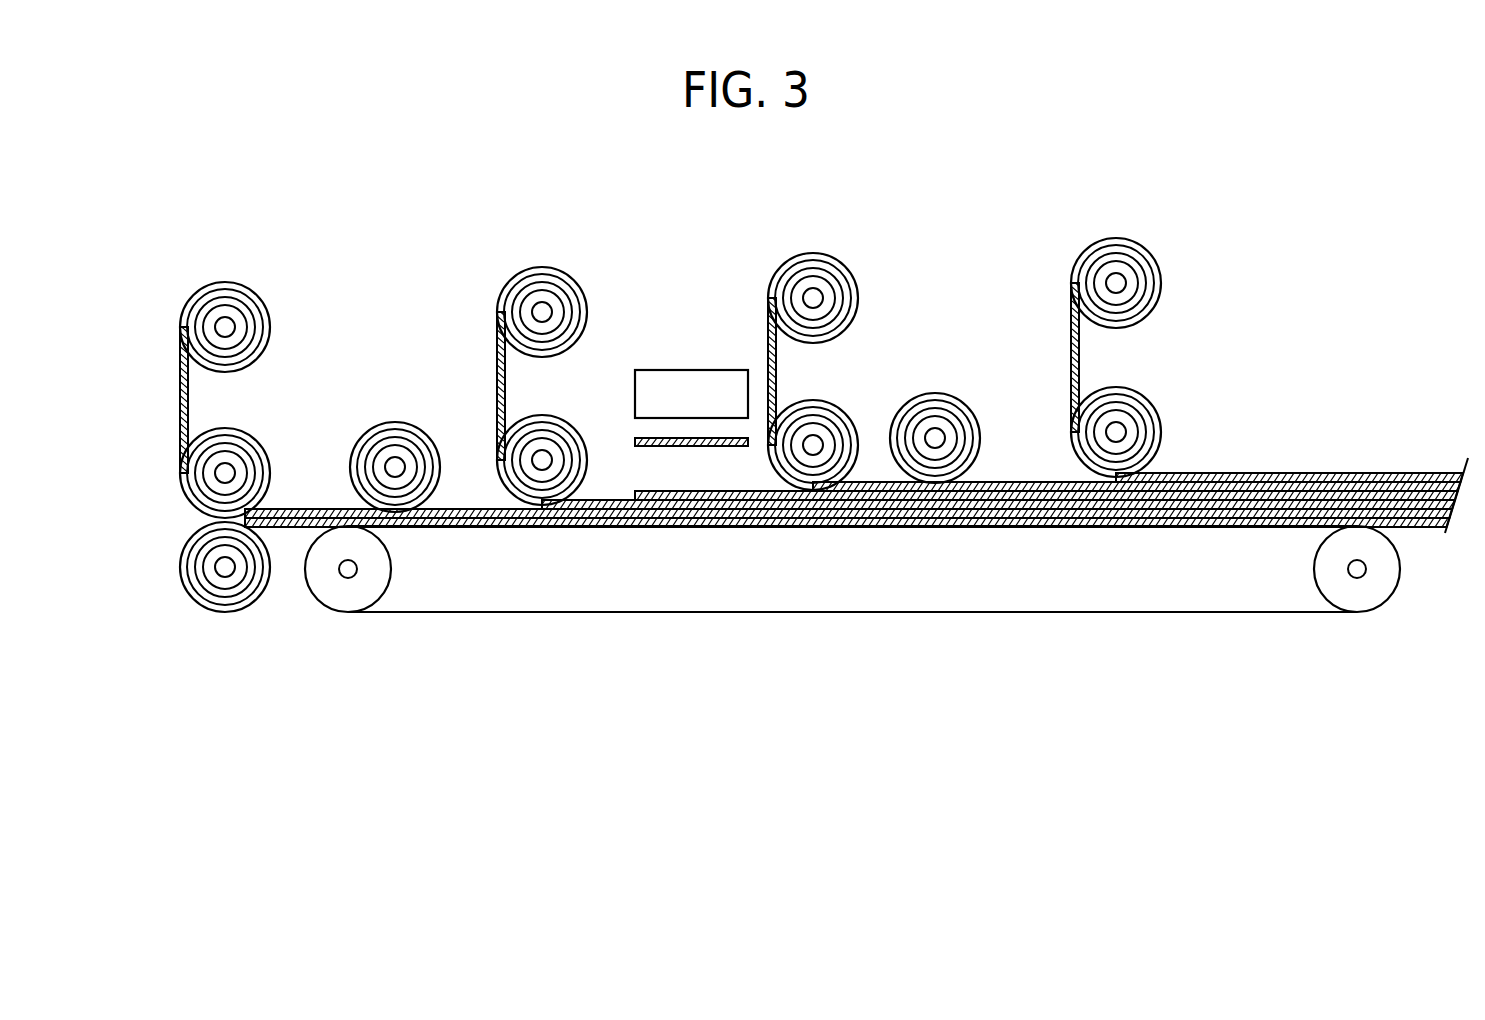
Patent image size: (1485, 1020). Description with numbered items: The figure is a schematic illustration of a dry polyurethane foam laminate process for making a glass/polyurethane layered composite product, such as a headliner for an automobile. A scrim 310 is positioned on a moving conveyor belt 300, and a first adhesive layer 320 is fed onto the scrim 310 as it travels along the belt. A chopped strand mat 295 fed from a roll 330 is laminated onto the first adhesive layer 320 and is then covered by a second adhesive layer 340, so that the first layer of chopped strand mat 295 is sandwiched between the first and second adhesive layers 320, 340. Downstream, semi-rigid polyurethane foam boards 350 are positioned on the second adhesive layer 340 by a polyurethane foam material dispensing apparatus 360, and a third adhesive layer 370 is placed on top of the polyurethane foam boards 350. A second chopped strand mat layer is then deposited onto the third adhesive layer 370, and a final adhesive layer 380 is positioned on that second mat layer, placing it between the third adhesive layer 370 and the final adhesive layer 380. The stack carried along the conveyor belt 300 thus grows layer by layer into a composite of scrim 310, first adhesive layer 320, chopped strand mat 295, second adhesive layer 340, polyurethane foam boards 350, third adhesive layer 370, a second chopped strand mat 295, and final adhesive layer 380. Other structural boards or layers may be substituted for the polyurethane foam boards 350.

The moving conveyor belt 300 is at (845, 636).
The chopped strand mat 295 is at (462, 508).
The scrim 310 is at (225, 612).
The first adhesive layer 320 is at (180, 385).
The roll 330 is at (348, 470).
The second adhesive layer 340 is at (497, 358).
The polyurethane foam boards 350 is at (634, 441).
The polyurethane foam material dispensing apparatus 360 is at (677, 369).
The third adhesive layer 370 is at (768, 345).
The final adhesive layer 380 is at (1071, 340).